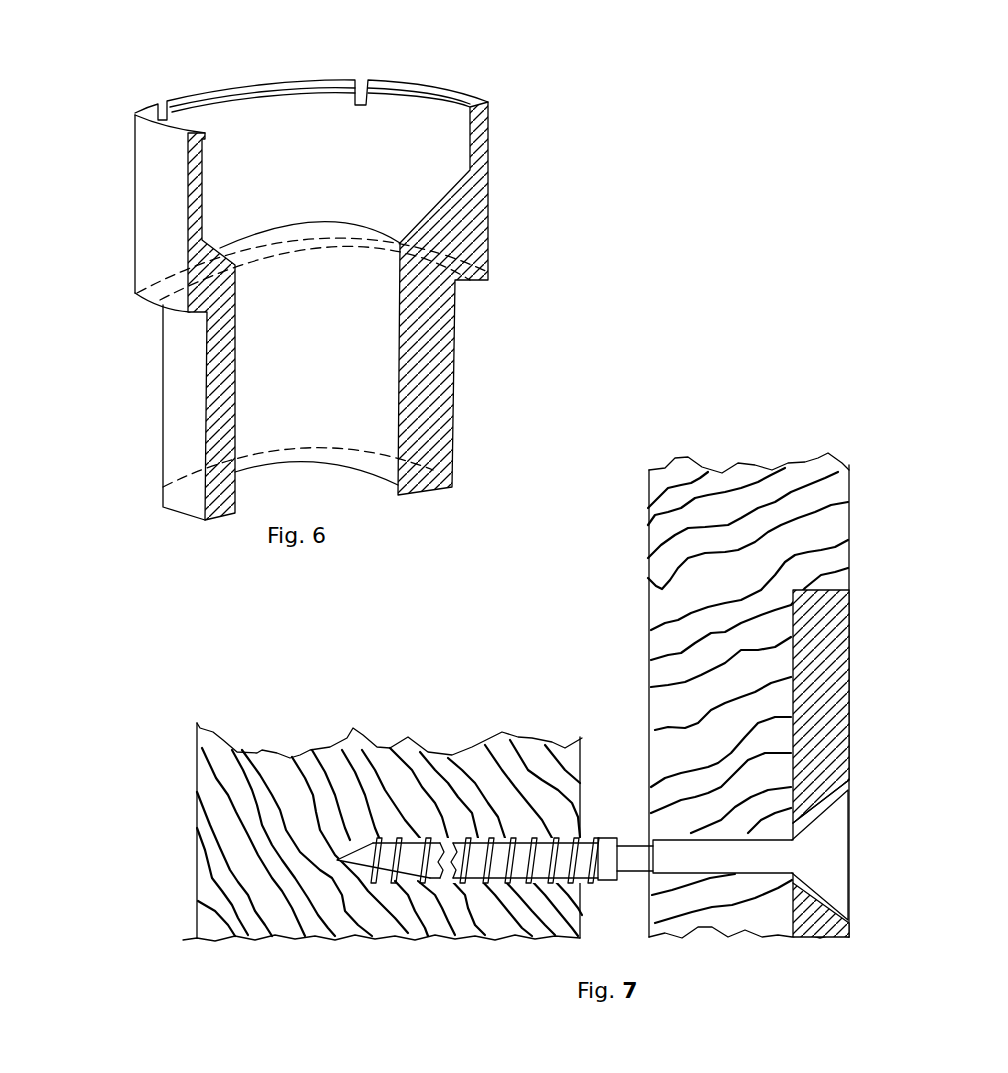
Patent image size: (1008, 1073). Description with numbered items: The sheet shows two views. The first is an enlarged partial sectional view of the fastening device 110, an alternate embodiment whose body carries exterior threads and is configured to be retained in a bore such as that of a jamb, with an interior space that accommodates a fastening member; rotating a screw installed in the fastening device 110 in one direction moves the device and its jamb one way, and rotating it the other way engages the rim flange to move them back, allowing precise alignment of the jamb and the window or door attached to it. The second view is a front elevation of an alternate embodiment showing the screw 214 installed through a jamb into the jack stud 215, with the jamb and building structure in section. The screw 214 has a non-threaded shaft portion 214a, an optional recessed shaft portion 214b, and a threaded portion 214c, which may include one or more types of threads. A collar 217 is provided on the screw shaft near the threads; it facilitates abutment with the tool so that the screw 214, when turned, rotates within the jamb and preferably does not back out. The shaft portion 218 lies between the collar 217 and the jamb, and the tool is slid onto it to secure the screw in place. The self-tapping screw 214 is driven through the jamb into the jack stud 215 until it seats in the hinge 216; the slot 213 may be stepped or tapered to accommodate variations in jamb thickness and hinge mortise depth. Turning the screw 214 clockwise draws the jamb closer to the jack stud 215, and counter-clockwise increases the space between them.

In FIG. 6, the fastening device 110 is at (114, 207).
In FIG. 7, the slot 213 is at (708, 530).
In FIG. 7, the screw 214 is at (593, 774).
In FIG. 7, the non-threaded shaft portion 214a is at (759, 875).
In FIG. 7, the recessed shaft portion 214b is at (652, 873).
In FIG. 7, the threaded portion 214c is at (493, 878).
In FIG. 7, the jack stud 215 is at (306, 804).
In FIG. 7, the hinge 216 is at (830, 690).
In FIG. 7, the collar 217 is at (603, 840).
In FIG. 7, the shaft portion 218 is at (637, 853).